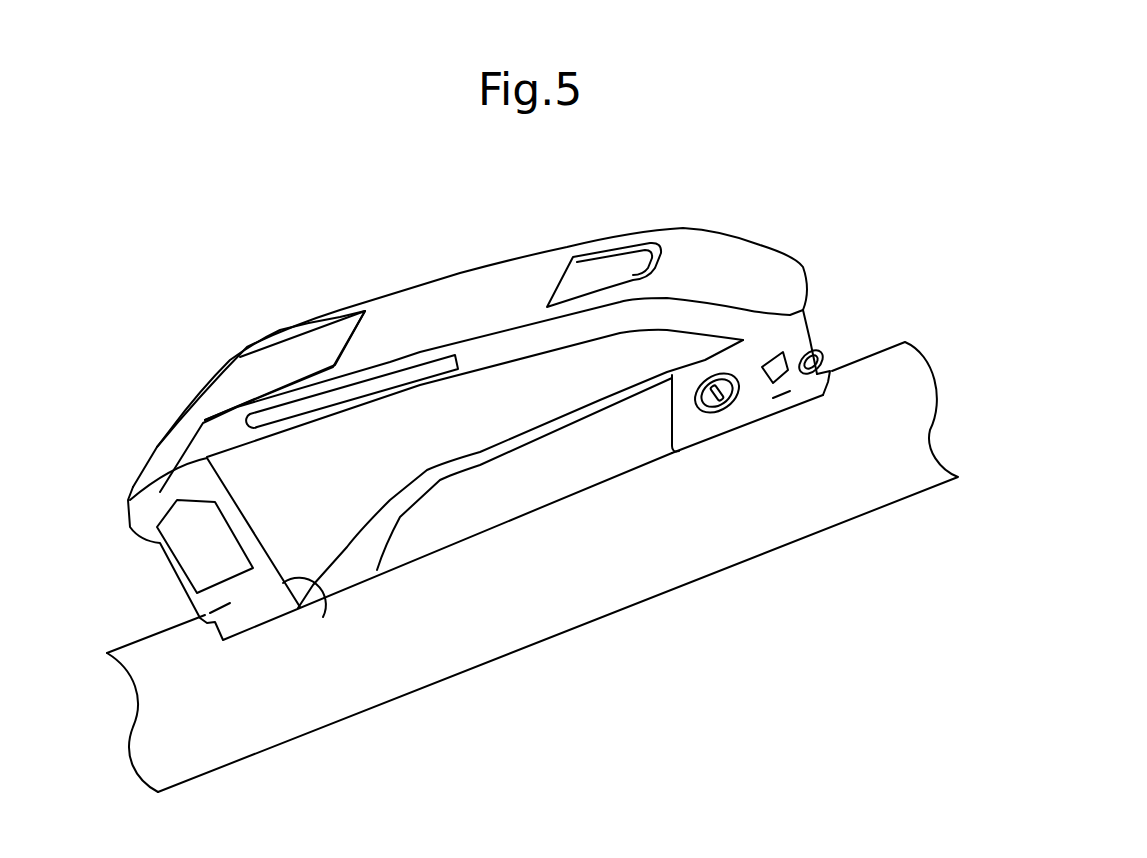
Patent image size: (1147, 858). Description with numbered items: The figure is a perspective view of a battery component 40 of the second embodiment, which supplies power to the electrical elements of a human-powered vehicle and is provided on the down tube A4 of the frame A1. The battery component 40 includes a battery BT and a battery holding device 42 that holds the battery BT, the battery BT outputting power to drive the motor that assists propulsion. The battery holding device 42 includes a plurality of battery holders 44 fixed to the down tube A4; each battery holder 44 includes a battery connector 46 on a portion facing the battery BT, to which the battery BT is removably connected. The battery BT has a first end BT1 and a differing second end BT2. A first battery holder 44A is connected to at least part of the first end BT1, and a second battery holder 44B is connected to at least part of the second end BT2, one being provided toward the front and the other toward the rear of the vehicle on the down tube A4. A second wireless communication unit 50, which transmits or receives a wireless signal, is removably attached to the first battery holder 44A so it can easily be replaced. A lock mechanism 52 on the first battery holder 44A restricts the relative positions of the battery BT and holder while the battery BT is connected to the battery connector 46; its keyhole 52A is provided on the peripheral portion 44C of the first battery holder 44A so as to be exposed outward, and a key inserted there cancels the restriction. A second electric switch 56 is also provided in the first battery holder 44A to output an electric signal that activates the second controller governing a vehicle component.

The battery component 40 is at (690, 176).
The battery holding device 42 is at (836, 203).
The battery holder 44 is at (307, 379).
The first battery holder 44A is at (840, 290).
The second battery holder 44B is at (141, 384).
The peripheral portion 44C is at (773, 398).
The battery connector 46 is at (672, 435).
The second wireless communication unit 50 is at (806, 398).
The lock mechanism 52 is at (704, 430).
The keyhole 52A is at (722, 410).
The second electric switch 56 is at (818, 348).
The battery BT is at (344, 286).
The first end BT1 is at (743, 243).
The second end BT2 is at (278, 333).
The down tube A4 is at (783, 547).
The frame A1 is at (132, 722).